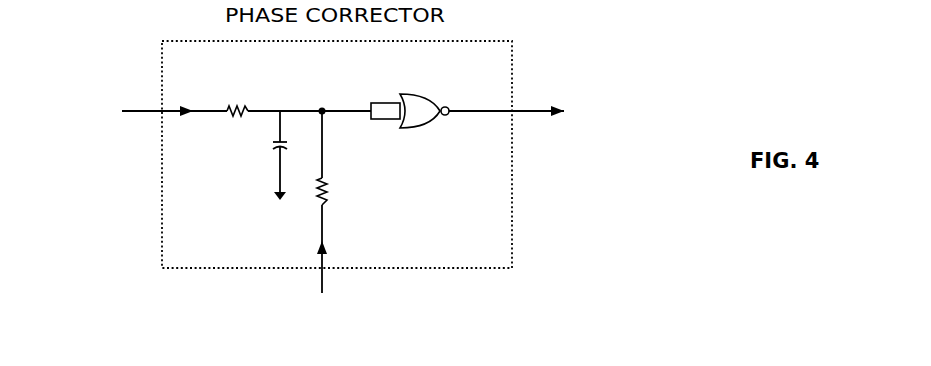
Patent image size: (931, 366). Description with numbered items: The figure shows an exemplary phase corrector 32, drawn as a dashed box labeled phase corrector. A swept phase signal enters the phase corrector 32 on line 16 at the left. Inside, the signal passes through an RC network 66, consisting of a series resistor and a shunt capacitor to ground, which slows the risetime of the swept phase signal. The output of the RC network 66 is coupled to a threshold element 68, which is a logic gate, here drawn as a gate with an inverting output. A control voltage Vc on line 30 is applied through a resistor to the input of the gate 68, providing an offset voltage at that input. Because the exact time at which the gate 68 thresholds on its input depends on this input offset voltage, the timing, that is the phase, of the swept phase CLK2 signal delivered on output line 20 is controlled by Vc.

The line 16 is at (152, 113).
The phase corrector 32 is at (493, 35).
The RC network 66 is at (287, 88).
The threshold element 68 is at (417, 132).
The line 30 is at (322, 215).
The line 20 is at (532, 117).